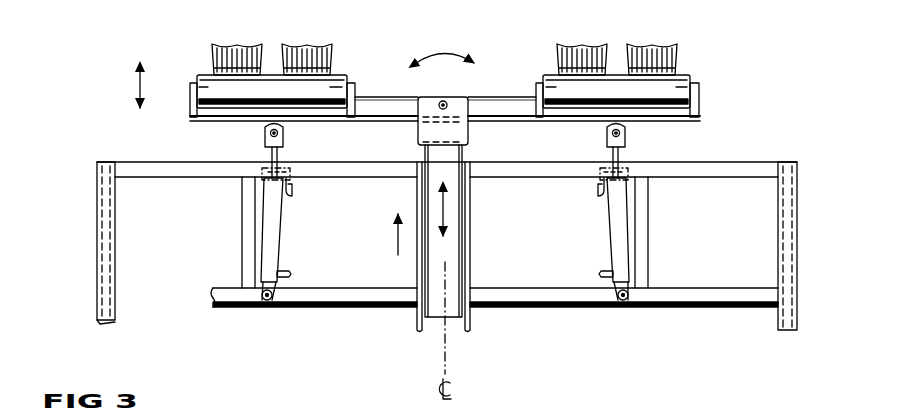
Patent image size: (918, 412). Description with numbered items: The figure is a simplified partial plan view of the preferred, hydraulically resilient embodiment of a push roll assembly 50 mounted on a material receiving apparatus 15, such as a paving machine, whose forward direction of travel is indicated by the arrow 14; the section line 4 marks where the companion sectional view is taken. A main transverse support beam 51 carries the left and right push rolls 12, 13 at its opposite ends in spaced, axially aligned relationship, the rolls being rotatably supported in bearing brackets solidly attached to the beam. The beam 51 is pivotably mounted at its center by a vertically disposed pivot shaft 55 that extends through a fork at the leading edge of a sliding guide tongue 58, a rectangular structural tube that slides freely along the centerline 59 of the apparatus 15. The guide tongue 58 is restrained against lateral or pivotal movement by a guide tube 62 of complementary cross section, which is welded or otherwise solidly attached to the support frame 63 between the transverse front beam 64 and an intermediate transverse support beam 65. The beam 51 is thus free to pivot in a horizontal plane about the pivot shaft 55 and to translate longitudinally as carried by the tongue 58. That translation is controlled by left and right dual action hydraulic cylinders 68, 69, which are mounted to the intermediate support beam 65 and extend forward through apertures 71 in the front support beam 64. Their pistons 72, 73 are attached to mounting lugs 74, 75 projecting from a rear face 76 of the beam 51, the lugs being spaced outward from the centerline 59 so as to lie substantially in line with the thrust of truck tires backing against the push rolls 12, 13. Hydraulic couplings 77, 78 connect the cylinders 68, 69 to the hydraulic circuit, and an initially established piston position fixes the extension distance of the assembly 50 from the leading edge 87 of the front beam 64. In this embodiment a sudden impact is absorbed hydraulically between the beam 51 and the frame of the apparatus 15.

The section line 4- 4 is at (257, 177).
The left push roll 12 is at (337, 77).
The right push roll 13 is at (681, 77).
The arrow 14 is at (398, 228).
The apparatus 15 is at (100, 134).
The push roll assembly 50 is at (500, 60).
The main transverse support beam 51 is at (391, 97).
The pivot shaft 55 is at (447, 100).
The sliding guide tongue 58 is at (466, 156).
The centerline 59 is at (448, 340).
The guide tube 62 is at (472, 233).
The support frame 63 is at (244, 233).
The transverse front beam 64 is at (484, 178).
The intermediate transverse support beam 65 is at (491, 288).
The left hydraulic cylinder 68 is at (281, 240).
The right hydraulic cylinder 69 is at (612, 231).
The apertures 71 is at (293, 185).
The piston 72 is at (280, 158).
The piston 73 is at (621, 151).
The mounting lug 74 is at (285, 130).
The mounting lug 75 is at (641, 129).
The rear face 76 is at (391, 128).
The hydraulic coupling 77 is at (291, 275).
The hydraulic coupling 78 is at (291, 194).
The leading edge 87 is at (745, 162).